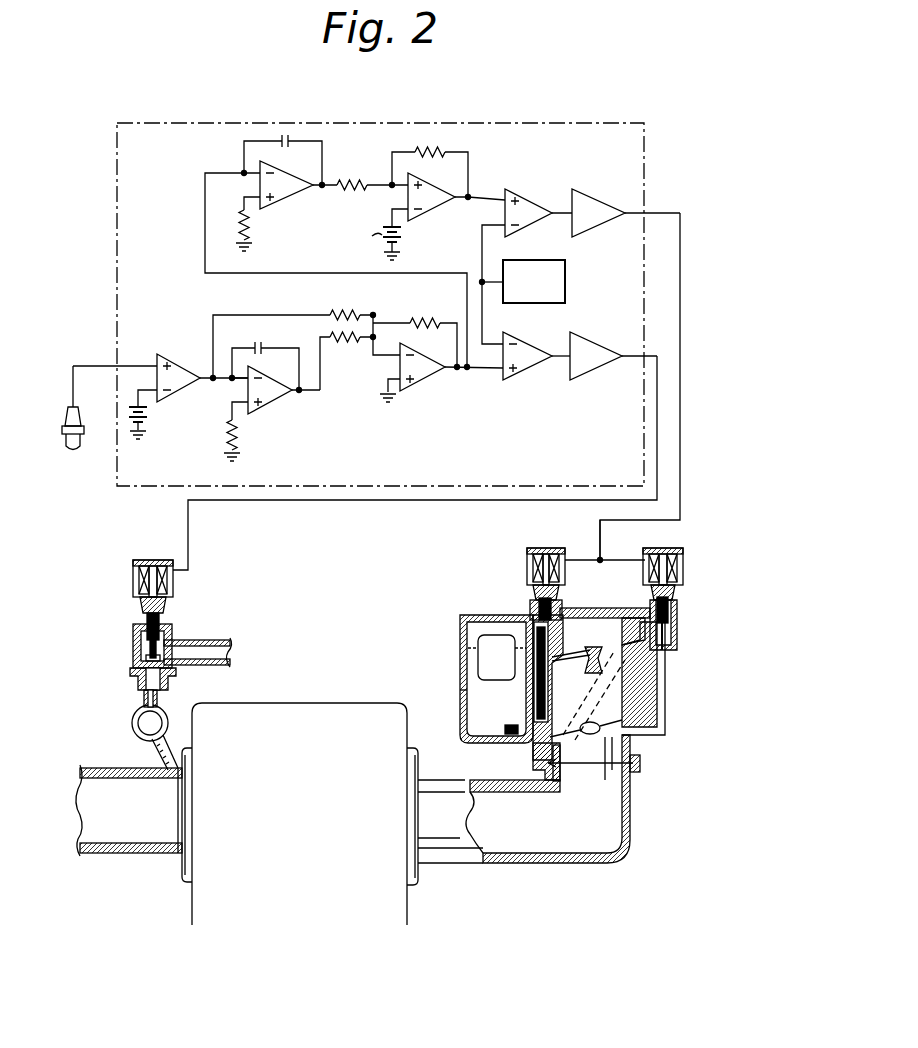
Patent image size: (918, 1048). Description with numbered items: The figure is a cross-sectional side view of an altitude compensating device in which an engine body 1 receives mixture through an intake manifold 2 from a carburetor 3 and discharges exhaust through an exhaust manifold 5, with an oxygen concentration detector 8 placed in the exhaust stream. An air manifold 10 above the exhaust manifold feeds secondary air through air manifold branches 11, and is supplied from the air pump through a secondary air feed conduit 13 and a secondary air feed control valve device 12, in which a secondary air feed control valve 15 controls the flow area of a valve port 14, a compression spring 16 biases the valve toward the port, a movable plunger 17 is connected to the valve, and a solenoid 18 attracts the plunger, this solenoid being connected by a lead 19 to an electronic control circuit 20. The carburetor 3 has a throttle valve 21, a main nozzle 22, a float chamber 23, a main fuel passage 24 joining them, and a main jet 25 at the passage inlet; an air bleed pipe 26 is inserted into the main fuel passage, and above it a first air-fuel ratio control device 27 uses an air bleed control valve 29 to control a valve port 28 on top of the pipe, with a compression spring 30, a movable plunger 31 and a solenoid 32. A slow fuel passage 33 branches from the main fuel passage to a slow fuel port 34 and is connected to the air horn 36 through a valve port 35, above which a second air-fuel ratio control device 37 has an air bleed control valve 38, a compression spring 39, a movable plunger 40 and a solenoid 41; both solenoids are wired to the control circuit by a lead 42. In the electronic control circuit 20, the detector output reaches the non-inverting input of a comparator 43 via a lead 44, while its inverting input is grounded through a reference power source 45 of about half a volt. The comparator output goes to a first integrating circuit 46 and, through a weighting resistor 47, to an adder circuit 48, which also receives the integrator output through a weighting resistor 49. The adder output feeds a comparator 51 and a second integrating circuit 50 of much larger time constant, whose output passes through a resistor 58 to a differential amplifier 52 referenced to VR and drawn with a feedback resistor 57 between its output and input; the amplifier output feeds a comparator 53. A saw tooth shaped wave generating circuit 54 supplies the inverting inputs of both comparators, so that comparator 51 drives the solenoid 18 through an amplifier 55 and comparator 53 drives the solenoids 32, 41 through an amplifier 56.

The engine body 1 is at (410, 888).
The intake manifold 2 is at (533, 863).
The carburetor 3 is at (453, 661).
The exhaust manifold 5 is at (125, 853).
The oxygen concentration detector 8 is at (63, 430).
The air manifold 10 is at (132, 726).
The air manifold branch 11 is at (152, 760).
The secondary air feed control valve device 12 is at (130, 621).
The secondary air feed conduit 13 is at (218, 644).
The valve port 14 is at (130, 677).
The secondary air feed control valve 15 is at (133, 648).
The compression spring 16 is at (162, 620).
The movable plunger 17 is at (165, 600).
The solenoid 18 is at (133, 575).
The lead 19 is at (320, 502).
The electronic control circuit 20 is at (407, 490).
The throttle valve 21 is at (614, 775).
The main nozzle 22 is at (552, 672).
The float chamber 23 is at (462, 692).
The main fuel passage 24 is at (540, 748).
The main jet 25 is at (508, 736).
The air bleed pipe 26 is at (525, 692).
The first air-fuel ratio control device 27 is at (520, 568).
The valve port 28 is at (553, 650).
The air bleed control valve 29 is at (535, 617).
The compression spring 30 is at (535, 600).
The movable plunger 31 is at (566, 565).
The solenoid 32 is at (538, 549).
The slow fuel passage 33 is at (670, 688).
The slow fuel port 34 is at (641, 760).
The valve port 35 is at (665, 670).
The air horn 36 is at (608, 637).
The second air-fuel ratio control device 37 is at (687, 572).
The air bleed control valve 38 is at (677, 640).
The compression spring 39 is at (676, 614).
The movable plunger 40 is at (675, 596).
The solenoid 41 is at (644, 576).
The lead 42 is at (686, 418).
The comparator 43 is at (181, 392).
The lead 44 is at (92, 364).
The reference power source 45 is at (146, 412).
The first integrating circuit 46 is at (272, 415).
The weighting resistor 47 is at (351, 312).
The adder circuit 48 is at (425, 392).
The weighting resistor 49 is at (348, 342).
The second integrating circuit 50 is at (285, 210).
The comparator 51 is at (520, 383).
The differential amplifier 52 is at (430, 222).
The comparator 53 is at (526, 200).
The saw tooth shaped wave generating circuit 54 is at (565, 284).
The amplifier 55 is at (592, 385).
The amplifier 56 is at (600, 200).
The feedback resistor 57 is at (443, 152).
The resistor 58 is at (355, 180).